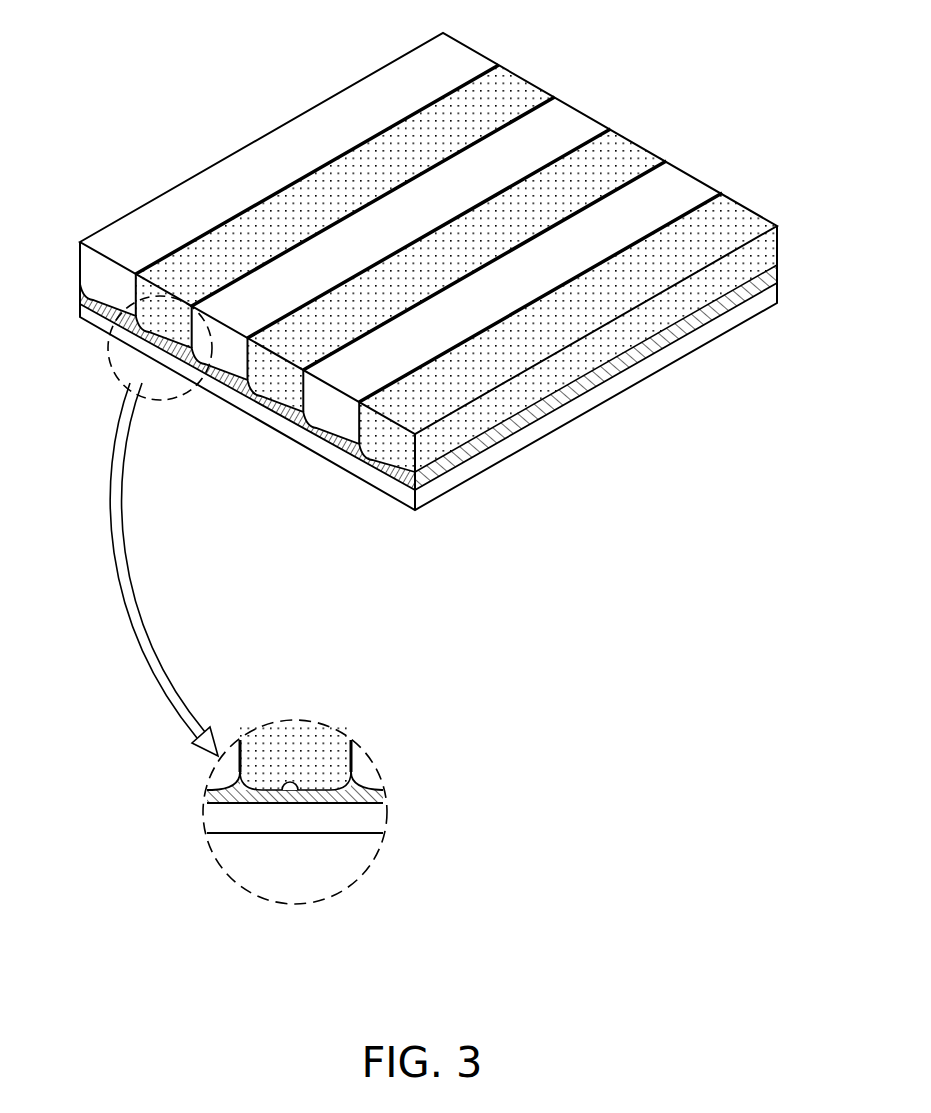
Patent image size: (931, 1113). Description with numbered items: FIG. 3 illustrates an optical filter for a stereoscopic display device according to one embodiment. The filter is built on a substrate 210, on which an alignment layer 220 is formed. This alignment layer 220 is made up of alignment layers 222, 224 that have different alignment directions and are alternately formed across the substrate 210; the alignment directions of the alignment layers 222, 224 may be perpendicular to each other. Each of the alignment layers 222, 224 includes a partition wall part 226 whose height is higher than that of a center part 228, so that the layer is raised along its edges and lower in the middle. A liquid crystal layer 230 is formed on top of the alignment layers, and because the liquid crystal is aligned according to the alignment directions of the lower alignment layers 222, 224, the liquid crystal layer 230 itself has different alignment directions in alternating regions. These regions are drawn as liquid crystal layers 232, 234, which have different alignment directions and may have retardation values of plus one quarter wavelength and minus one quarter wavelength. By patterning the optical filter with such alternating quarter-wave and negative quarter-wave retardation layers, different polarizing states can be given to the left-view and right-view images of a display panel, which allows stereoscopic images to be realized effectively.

The substrate 210 is at (543, 432).
The alignment layer 220 is at (428, 462).
The alignment layer 222 is at (257, 582).
The alignment layer 224 is at (312, 448).
The partition wall part 226 is at (633, 350).
The center part 228 is at (279, 795).
The liquid crystal layer 230 is at (434, 397).
The liquid crystal layer 232 is at (788, 55).
The liquid crystal layer 234 is at (685, 182).